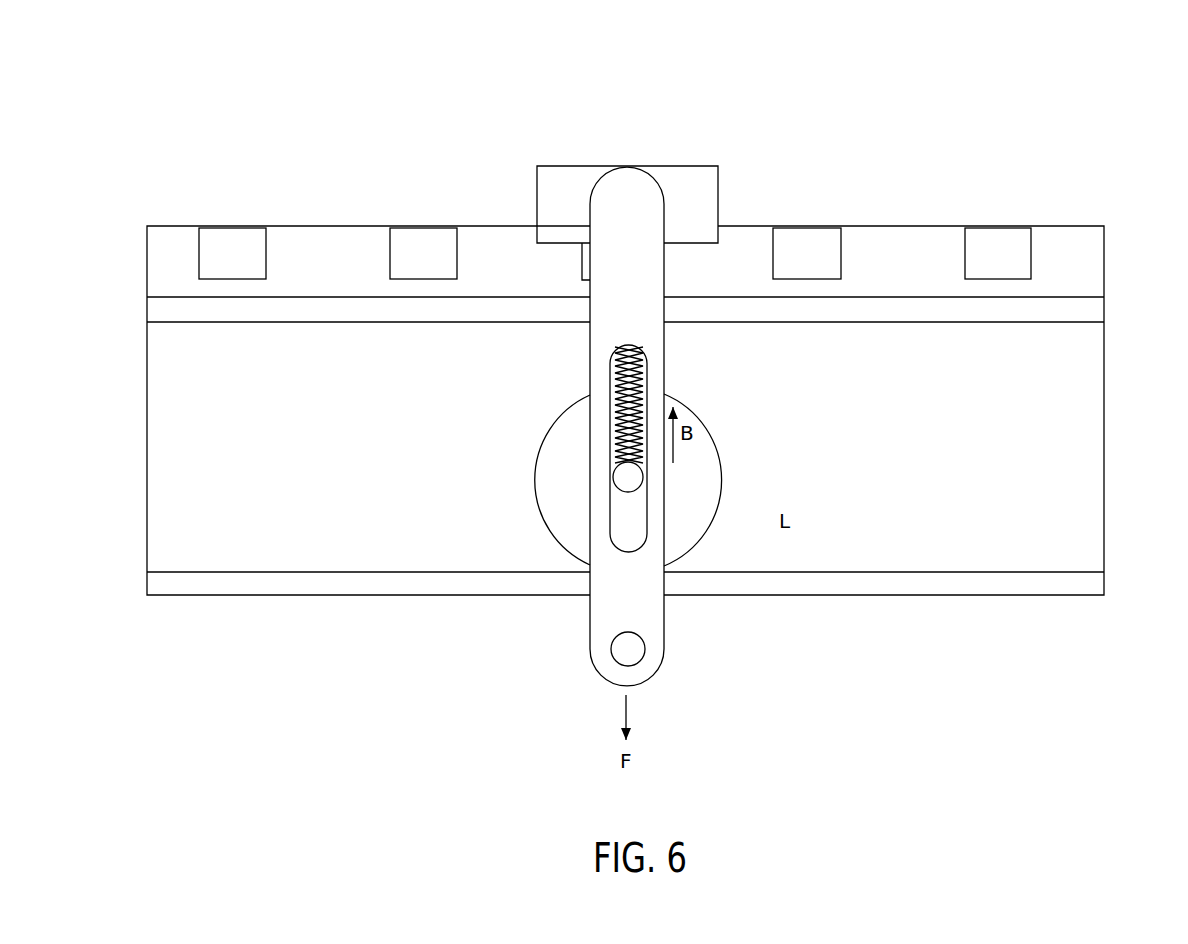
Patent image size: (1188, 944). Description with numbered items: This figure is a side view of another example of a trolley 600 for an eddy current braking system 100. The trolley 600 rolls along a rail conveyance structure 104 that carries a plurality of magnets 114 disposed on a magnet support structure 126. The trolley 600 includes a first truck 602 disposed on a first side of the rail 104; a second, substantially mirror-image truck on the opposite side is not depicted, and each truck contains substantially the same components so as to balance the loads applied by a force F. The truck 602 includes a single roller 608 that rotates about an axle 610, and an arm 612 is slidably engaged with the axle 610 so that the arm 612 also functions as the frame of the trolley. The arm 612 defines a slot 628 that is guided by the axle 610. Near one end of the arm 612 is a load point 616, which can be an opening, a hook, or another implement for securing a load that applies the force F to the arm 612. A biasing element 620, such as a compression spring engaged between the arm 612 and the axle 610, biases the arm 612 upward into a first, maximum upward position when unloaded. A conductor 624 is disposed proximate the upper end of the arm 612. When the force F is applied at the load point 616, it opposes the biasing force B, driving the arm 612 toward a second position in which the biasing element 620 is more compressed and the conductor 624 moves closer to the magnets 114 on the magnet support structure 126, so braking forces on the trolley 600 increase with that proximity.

The eddy current braking system 100 is at (975, 103).
The rail conveyance structure 104 is at (1058, 430).
The magnets 114 is at (240, 248).
The magnet support structure 126 is at (1068, 259).
The trolley 600 is at (395, 670).
The first truck 602 is at (710, 623).
The roller 608 is at (693, 498).
The axle 610 is at (628, 478).
The arm 612 is at (605, 341).
The load point 616 is at (627, 650).
The biasing element 620 is at (622, 447).
The conductor 624 is at (567, 183).
The slot 628 is at (645, 380).